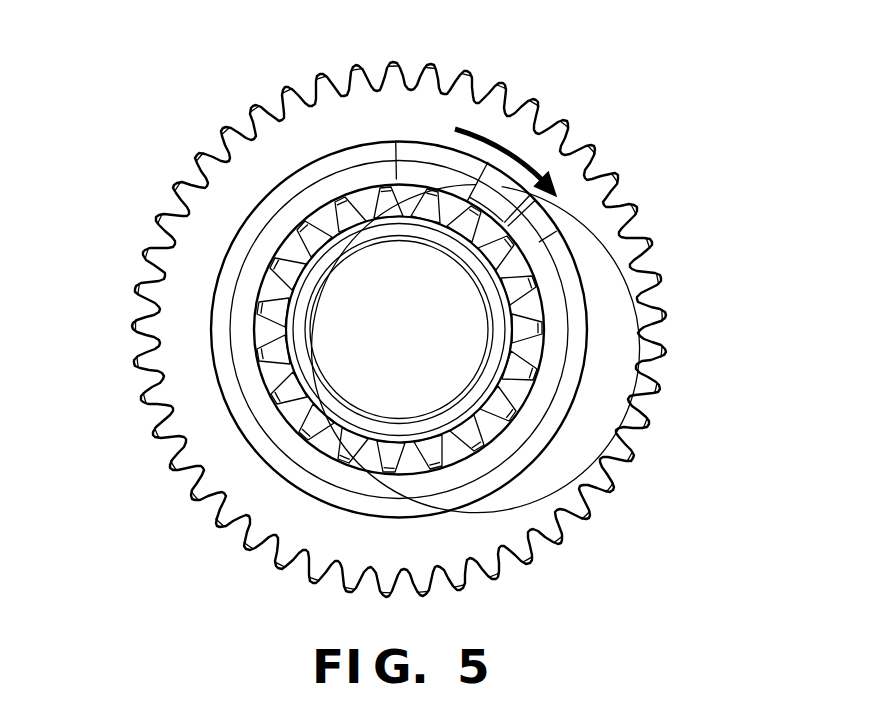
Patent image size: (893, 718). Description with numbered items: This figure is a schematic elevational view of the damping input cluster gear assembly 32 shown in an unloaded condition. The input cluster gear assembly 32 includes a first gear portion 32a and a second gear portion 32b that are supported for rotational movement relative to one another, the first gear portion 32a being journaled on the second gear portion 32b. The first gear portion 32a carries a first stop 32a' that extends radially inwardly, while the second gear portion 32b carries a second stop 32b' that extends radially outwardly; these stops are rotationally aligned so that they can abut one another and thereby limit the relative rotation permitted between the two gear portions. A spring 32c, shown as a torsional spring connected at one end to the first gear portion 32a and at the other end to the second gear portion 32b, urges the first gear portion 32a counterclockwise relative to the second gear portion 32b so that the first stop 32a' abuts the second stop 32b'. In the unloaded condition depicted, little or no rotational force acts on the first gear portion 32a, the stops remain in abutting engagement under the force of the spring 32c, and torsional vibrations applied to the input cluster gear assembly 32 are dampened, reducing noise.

The input cluster gear assembly 32 is at (413, 312).
The first gear portion 32a is at (464, 329).
The first stop 32a' is at (635, 221).
The second gear portion 32b is at (286, 330).
The second stop 32b' is at (538, 125).
The spring 32c is at (300, 192).